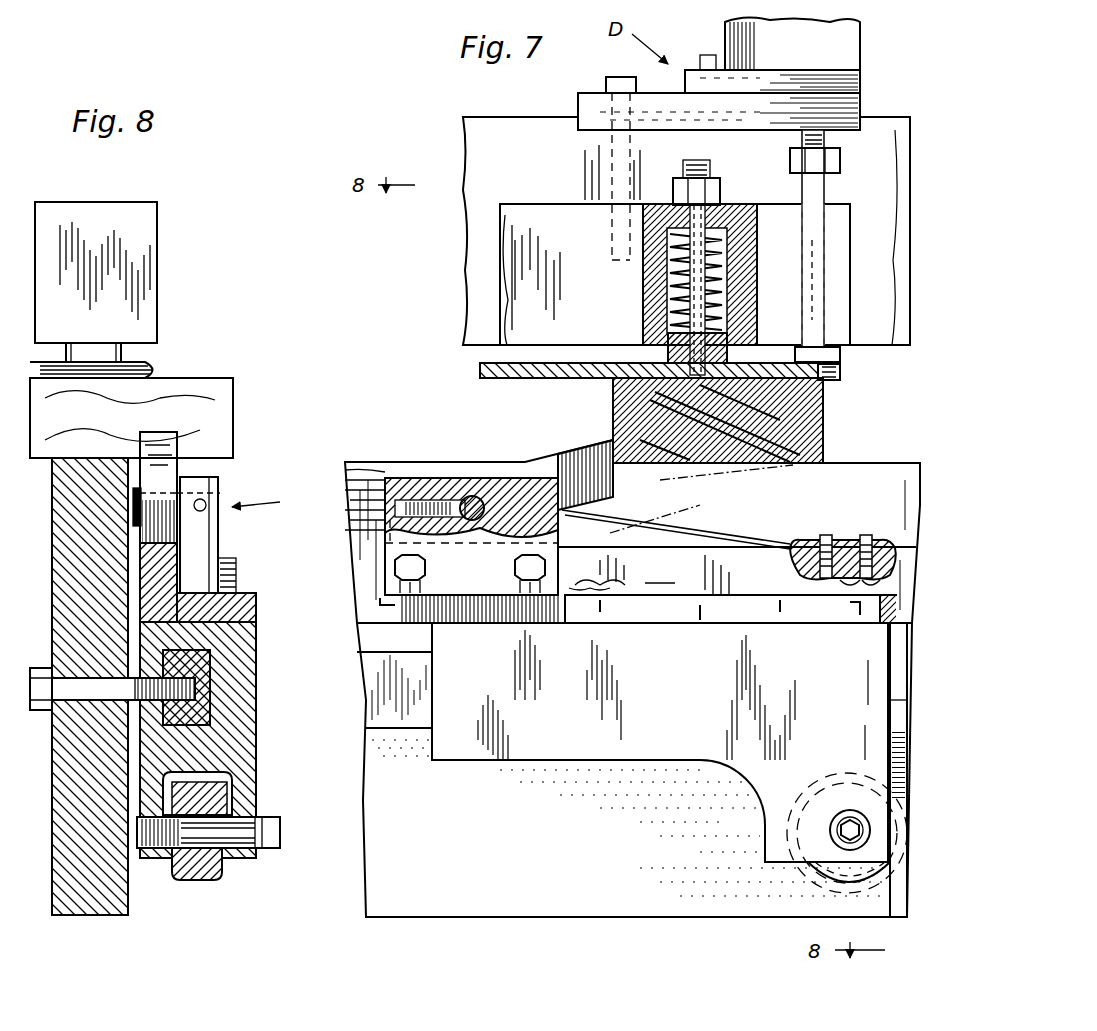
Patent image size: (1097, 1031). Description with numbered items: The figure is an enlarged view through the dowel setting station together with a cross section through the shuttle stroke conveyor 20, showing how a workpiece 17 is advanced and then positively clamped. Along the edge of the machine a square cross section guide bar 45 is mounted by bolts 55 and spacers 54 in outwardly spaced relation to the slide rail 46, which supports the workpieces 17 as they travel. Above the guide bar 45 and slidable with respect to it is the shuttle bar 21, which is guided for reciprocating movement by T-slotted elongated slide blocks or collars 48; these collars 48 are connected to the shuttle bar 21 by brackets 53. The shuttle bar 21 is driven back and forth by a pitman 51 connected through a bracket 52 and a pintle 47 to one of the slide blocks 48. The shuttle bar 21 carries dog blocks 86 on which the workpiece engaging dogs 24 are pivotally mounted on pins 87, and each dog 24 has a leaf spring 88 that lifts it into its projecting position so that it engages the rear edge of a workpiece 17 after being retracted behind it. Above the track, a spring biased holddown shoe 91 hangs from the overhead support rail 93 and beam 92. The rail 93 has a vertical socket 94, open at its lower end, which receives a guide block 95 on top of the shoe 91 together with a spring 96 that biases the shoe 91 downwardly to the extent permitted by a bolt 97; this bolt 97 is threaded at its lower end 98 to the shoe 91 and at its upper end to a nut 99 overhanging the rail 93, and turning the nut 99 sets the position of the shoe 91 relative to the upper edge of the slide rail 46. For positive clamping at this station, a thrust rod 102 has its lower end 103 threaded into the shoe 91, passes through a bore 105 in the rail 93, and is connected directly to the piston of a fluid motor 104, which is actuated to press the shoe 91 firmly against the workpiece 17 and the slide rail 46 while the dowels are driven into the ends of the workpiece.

In FIG. 8, the workpiece 17 is at (225, 406).
In FIG. 7, the workpiece 17 is at (790, 400).
In FIG. 8, the shuttle stroke conveyor 20 is at (270, 500).
In FIG. 8, the shuttle bar 21 is at (165, 562).
In FIG. 7, the shuttle bar 21 is at (731, 576).
In FIG. 8, the dog 24 is at (178, 440).
In FIG. 7, the dog 24 is at (580, 458).
In FIG. 8, the guide bar 45 is at (205, 668).
In FIG. 8, the slide rail 46 is at (88, 882).
In FIG. 7, the slide rail 46 is at (893, 452).
In FIG. 8, the pintle 47 is at (270, 846).
In FIG. 8, the slide block 48 is at (232, 690).
In FIG. 7, the slide block 48 is at (578, 737).
In FIG. 8, the pitman 51 is at (178, 880).
In FIG. 7, the pitman 51 is at (840, 879).
In FIG. 8, the bracket 52 is at (200, 878).
In FIG. 7, the bracket 52 is at (775, 831).
In FIG. 8, the bracket 53 is at (250, 607).
In FIG. 7, the bracket 53 is at (706, 612).
In FIG. 8, the spacer 54 is at (135, 705).
In FIG. 8, the bolt 55 is at (90, 690).
In FIG. 8, the dog block 86 is at (218, 492).
In FIG. 7, the dog block 86 is at (415, 478).
In FIG. 8, the pin 87 is at (133, 506).
In FIG. 7, the pin 87 is at (478, 496).
In FIG. 7, the leaf spring 88 is at (690, 522).
In FIG. 8, the holddown shoe 91 is at (155, 366).
In FIG. 7, the holddown shoe 91 is at (502, 370).
In FIG. 7, the beam 92 is at (553, 104).
In FIG. 8, the support rail 93 is at (125, 217).
In FIG. 7, the support rail 93 is at (540, 188).
In FIG. 7, the socket 94 is at (750, 238).
In FIG. 8, the guide block 95 is at (90, 352).
In FIG. 7, the guide block 95 is at (670, 342).
In FIG. 7, the spring 96 is at (690, 262).
In FIG. 7, the bolt 97 is at (712, 212).
In FIG. 7, the threaded lower end 98 is at (718, 420).
In FIG. 7, the nut 99 is at (710, 180).
In FIG. 7, the thrust rod 102 is at (826, 184).
In FIG. 7, the lower end of thrust rod 103 is at (838, 360).
In FIG. 7, the fluid motor 104 is at (808, 35).
In FIG. 7, the bore 105 is at (818, 252).